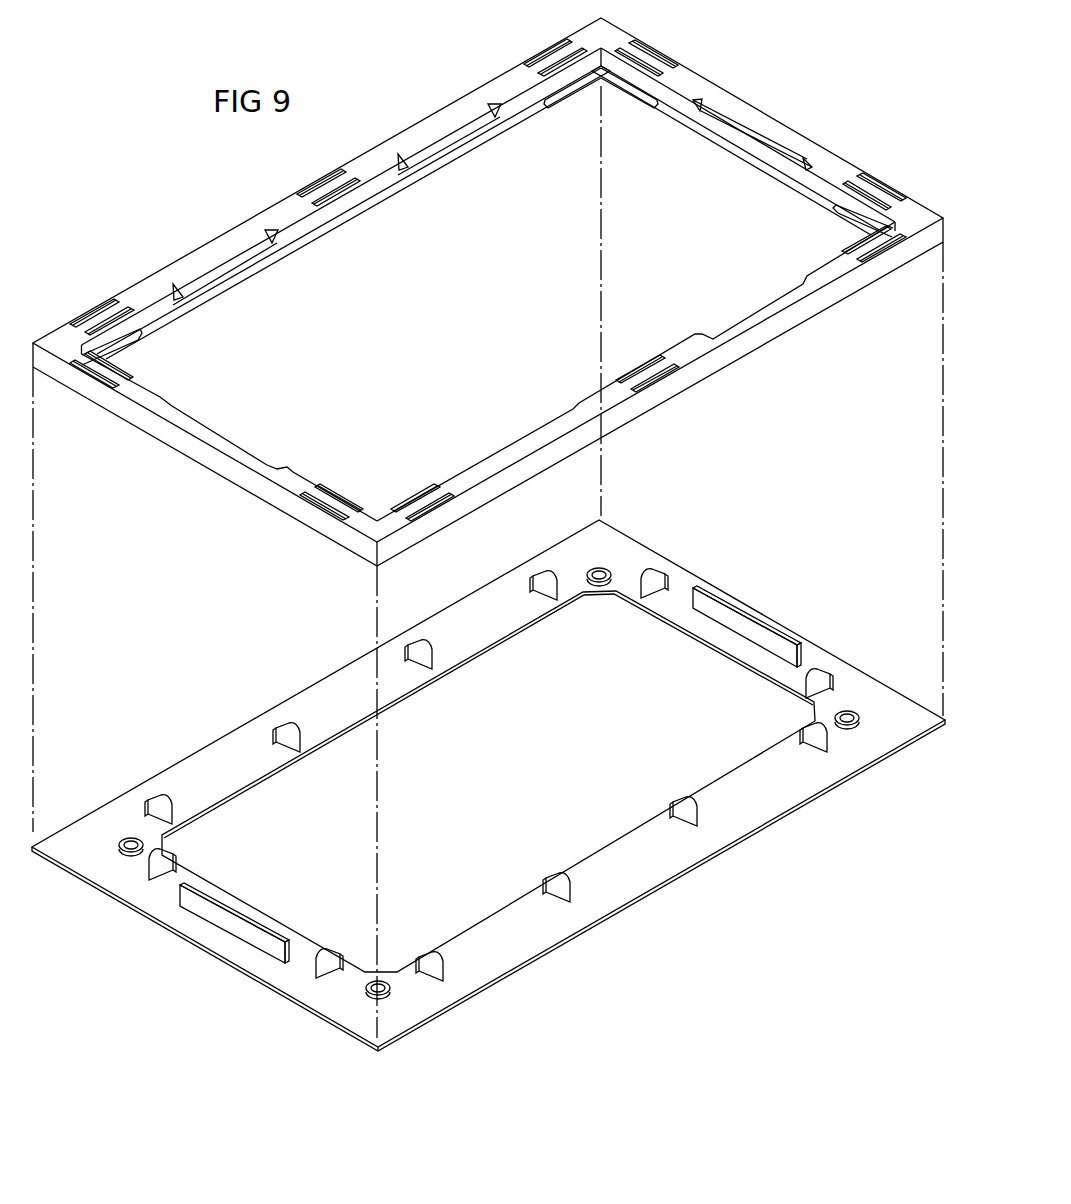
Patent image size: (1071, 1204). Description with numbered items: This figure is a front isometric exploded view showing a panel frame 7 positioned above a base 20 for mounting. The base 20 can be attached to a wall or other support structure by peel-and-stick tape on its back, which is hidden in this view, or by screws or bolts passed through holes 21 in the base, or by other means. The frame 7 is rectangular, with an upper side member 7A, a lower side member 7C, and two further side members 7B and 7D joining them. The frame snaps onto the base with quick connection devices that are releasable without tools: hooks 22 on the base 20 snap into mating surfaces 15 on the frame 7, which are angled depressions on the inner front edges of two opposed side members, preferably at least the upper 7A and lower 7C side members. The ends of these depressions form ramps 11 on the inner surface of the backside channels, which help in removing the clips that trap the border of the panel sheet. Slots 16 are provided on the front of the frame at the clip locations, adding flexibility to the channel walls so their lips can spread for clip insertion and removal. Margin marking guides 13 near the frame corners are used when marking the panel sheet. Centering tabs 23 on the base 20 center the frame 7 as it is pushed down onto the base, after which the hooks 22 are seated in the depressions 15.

The panel frame 7 is at (788, 323).
The upper side member 7A is at (790, 128).
The side member 7B is at (640, 418).
The lower side member 7C is at (203, 467).
The side member 7D is at (278, 205).
The ramp 11 is at (703, 100).
The margin marking guide 13 is at (585, 96).
The mating surface 15 is at (756, 134).
The slot 16 is at (414, 497).
The base 20 is at (610, 850).
The hole 21 is at (860, 716).
The hook 22 is at (750, 617).
The centering tab 23 is at (418, 648).